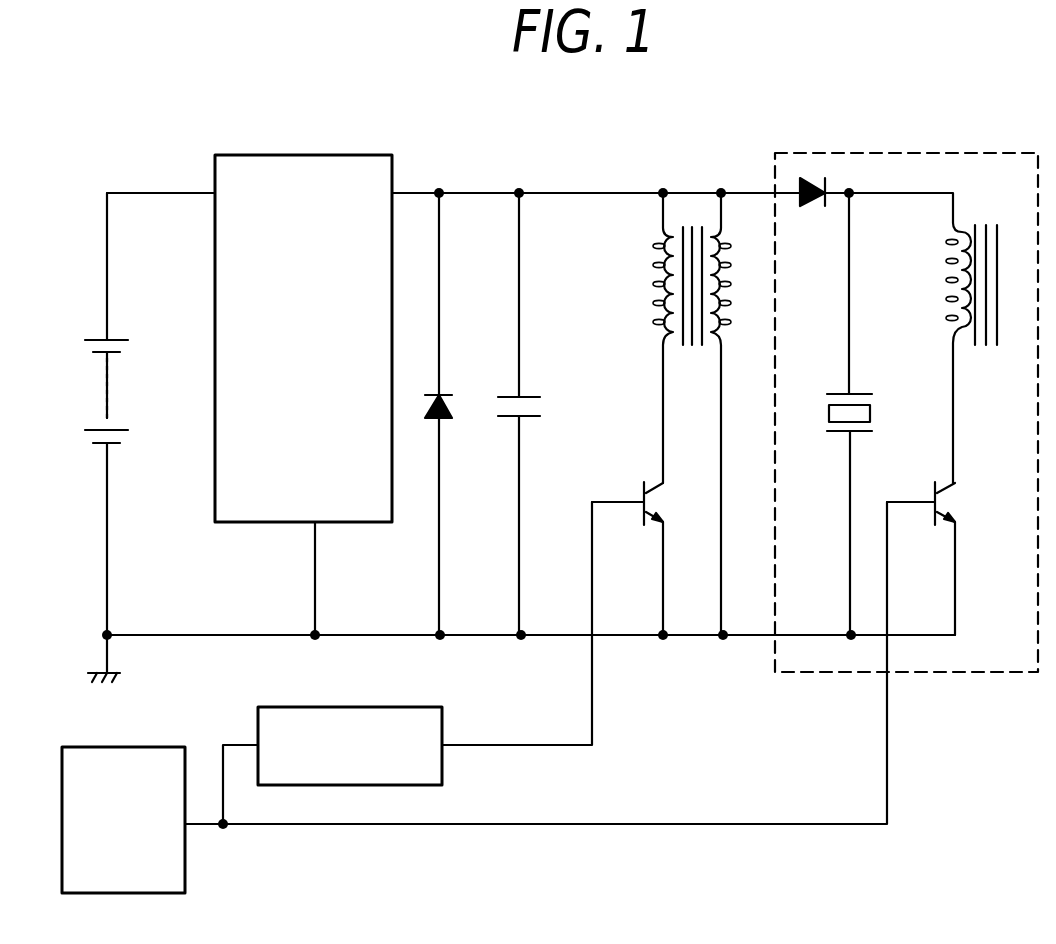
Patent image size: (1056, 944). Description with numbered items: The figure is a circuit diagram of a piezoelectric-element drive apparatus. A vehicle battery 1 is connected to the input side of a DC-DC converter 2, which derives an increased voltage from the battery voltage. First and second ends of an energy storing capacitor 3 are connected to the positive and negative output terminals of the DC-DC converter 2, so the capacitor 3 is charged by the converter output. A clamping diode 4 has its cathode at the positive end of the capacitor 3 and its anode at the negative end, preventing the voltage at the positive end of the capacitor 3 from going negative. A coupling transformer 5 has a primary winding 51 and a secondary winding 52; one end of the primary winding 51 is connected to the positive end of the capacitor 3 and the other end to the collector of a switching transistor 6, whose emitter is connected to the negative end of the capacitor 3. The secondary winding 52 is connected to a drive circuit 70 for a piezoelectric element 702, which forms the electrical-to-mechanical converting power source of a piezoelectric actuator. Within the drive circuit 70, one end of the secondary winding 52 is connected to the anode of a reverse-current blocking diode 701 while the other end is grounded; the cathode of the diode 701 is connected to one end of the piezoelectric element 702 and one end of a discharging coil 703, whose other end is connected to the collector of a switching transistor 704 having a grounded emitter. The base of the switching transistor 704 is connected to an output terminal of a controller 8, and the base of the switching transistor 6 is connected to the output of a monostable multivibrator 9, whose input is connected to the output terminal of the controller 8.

The vehicle battery 1 is at (116, 331).
The DC-DC converter 2 is at (345, 152).
The energy storing capacitor 3 is at (556, 410).
The clamping diode 4 is at (444, 404).
The coupling transformer 5 is at (695, 396).
The primary winding 51 is at (650, 263).
The secondary winding 52 is at (739, 266).
The switching transistor 6 is at (665, 500).
The drive circuit 70 is at (990, 152).
The reverse-current blocking diode 701 is at (812, 208).
The piezoelectric element 702 is at (873, 406).
The discharging coil 703 is at (927, 262).
The switching transistor 704 is at (955, 498).
The controller 8 is at (142, 748).
The monostable multivibrator 9 is at (398, 707).